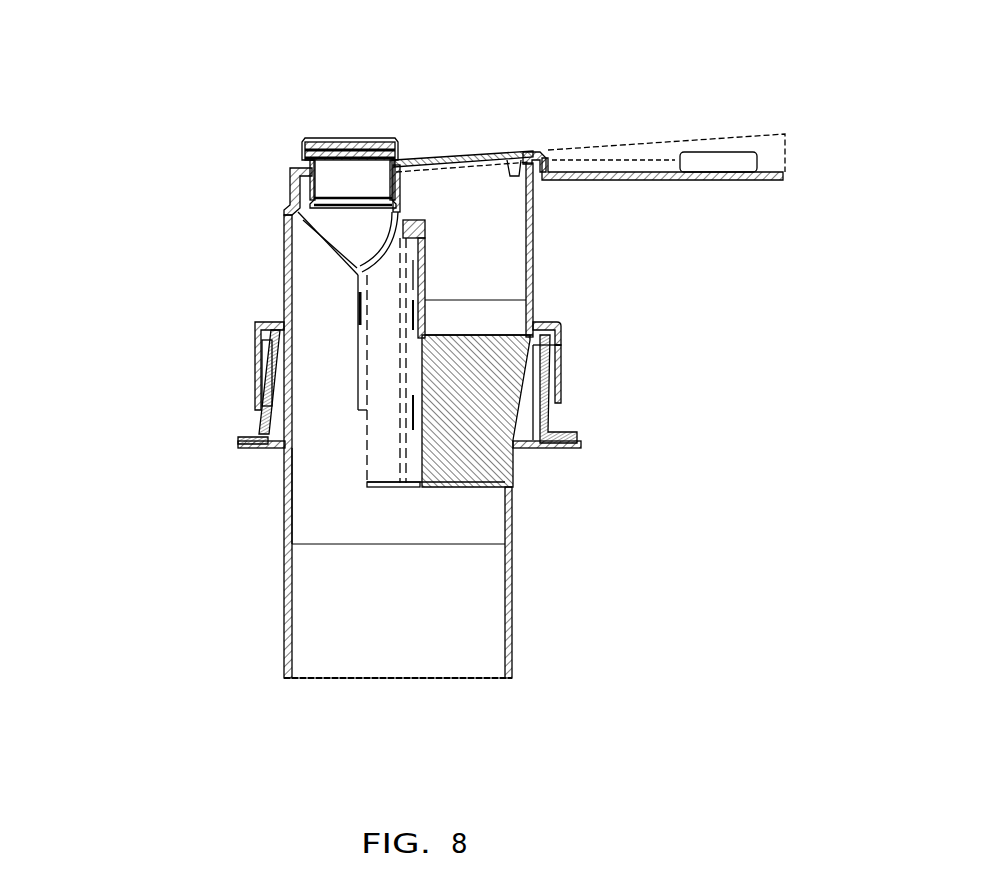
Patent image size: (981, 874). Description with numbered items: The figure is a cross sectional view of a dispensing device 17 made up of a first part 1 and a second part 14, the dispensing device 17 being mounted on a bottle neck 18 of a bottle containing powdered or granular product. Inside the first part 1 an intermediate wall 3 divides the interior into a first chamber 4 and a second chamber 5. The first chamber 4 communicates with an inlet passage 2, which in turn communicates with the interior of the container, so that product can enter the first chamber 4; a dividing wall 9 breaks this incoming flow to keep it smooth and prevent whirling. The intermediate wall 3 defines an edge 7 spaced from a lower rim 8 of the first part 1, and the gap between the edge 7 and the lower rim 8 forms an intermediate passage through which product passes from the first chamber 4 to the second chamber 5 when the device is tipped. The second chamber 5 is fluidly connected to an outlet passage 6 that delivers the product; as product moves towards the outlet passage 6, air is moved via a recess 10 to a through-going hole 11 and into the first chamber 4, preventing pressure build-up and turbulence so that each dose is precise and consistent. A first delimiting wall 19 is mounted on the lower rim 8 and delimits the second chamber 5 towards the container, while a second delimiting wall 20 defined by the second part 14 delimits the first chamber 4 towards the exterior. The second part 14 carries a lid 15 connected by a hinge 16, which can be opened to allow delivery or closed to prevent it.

The first part 1 is at (510, 582).
The inlet passage 2 is at (537, 347).
The intermediate wall 3 is at (388, 402).
The first chamber 4 is at (478, 231).
The second chamber 5 is at (330, 438).
The outlet passage 6 is at (343, 140).
The edge 7 is at (395, 488).
The lower rim 8 is at (289, 680).
The dividing wall 9 is at (460, 424).
The recess 10 is at (417, 325).
The through-going hole 11 is at (410, 228).
The second part 14 is at (291, 255).
The lid 15 is at (675, 180).
The hinge 16 is at (540, 153).
The dispensing device 17 is at (103, 86).
The bottle neck 18 is at (575, 435).
The first delimiting wall 19 is at (397, 680).
The second delimiting wall 20 is at (488, 158).